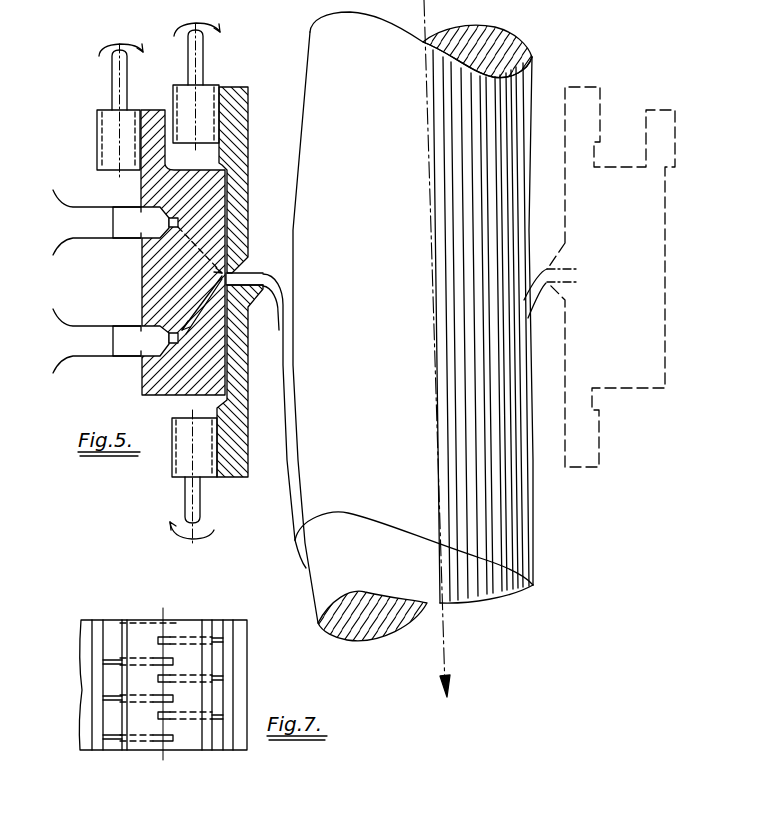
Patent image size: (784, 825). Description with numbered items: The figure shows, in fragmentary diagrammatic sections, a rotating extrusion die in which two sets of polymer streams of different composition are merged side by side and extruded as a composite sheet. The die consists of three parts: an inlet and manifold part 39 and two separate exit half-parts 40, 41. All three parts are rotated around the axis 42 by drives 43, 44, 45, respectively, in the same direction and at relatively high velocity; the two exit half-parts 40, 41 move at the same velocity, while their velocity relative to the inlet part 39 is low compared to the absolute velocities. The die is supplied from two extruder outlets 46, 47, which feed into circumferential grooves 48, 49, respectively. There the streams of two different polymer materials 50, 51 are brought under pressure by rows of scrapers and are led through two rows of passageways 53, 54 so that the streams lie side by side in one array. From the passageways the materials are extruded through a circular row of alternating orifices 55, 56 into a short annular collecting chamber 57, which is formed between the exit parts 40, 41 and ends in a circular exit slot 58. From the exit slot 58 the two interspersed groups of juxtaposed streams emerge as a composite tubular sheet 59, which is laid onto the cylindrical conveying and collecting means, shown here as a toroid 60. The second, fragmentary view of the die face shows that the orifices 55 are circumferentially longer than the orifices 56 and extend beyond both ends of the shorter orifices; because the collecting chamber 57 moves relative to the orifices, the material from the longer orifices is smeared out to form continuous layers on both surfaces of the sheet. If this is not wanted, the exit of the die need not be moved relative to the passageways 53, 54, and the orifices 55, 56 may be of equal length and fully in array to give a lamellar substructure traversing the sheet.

In FIG. 5, the inlet and manifold part 39 is at (155, 113).
In FIG. 7, the inlet and manifold part 39 is at (81, 690).
In FIG. 5, the exit half-part 40 is at (248, 97).
In FIG. 5, the exit half-part 41 is at (243, 471).
In FIG. 5, the axis 42 is at (408, 98).
In FIG. 5, the drive 43 is at (112, 97).
In FIG. 5, the drive 44 is at (203, 63).
In FIG. 5, the drive 45 is at (200, 505).
In FIG. 5, the extruder outlet 46 is at (125, 225).
In FIG. 5, the extruder outlet 47 is at (125, 344).
In FIG. 5, the circumferential groove 48 is at (141, 238).
In FIG. 5, the circumferential groove 49 is at (143, 326).
In FIG. 5, the polymer material 50 is at (140, 208).
In FIG. 5, the polymer material 51 is at (140, 353).
In FIG. 5, the passageways 53 is at (236, 372).
In FIG. 7, the passageways 53 is at (143, 743).
In FIG. 5, the passageways 54 is at (228, 222).
In FIG. 7, the passageways 54 is at (182, 641).
In FIG. 7, the orifices 55 is at (173, 740).
In FIG. 7, the orifices 56 is at (158, 641).
In FIG. 5, the annular collecting chamber 57 is at (252, 263).
In FIG. 5, the exit slot 58 is at (251, 283).
In FIG. 5, the composite tubular sheet 59 is at (284, 318).
In FIG. 5, the toroid 60 is at (310, 58).